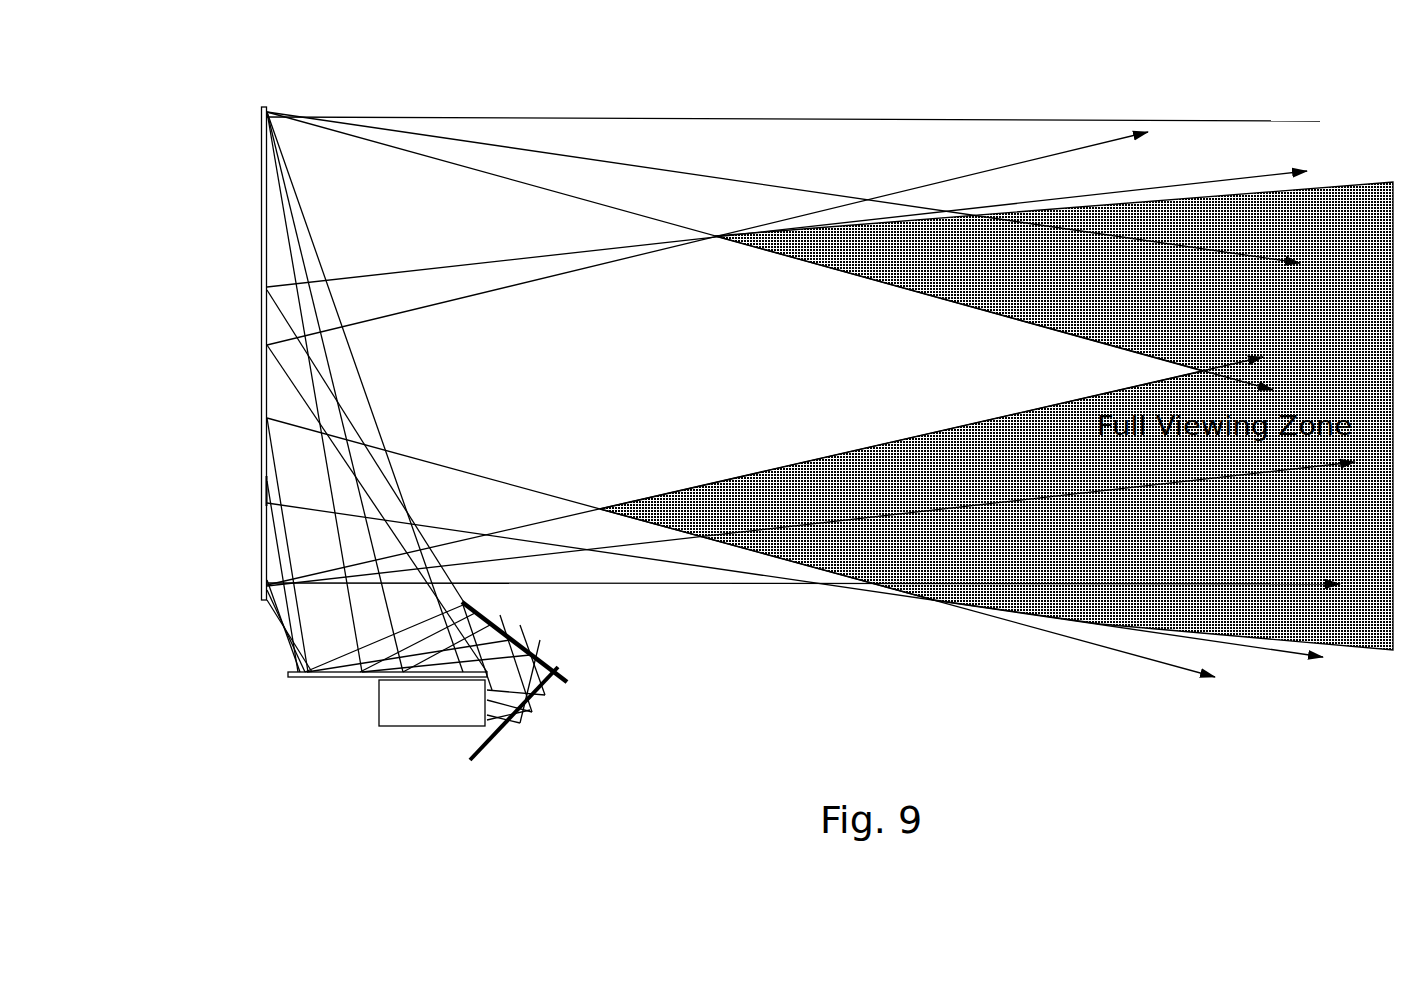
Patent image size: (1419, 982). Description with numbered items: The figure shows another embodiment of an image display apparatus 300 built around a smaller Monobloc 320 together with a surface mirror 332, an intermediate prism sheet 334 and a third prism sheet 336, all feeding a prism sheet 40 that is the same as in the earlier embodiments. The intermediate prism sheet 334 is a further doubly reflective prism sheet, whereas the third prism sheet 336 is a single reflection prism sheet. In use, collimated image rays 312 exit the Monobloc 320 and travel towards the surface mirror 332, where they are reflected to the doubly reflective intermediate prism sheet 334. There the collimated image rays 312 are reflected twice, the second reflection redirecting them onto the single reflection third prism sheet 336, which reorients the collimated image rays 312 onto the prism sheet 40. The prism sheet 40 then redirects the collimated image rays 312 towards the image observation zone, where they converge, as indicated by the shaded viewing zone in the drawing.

The image display apparatus 300 is at (818, 108).
The prism sheet 40 is at (261, 175).
The collimated image rays 312 is at (262, 481).
The third prism sheet 336 is at (342, 680).
The Monobloc 320 is at (433, 702).
The intermediate prism sheet 334 is at (533, 643).
The surface mirror 332 is at (530, 705).